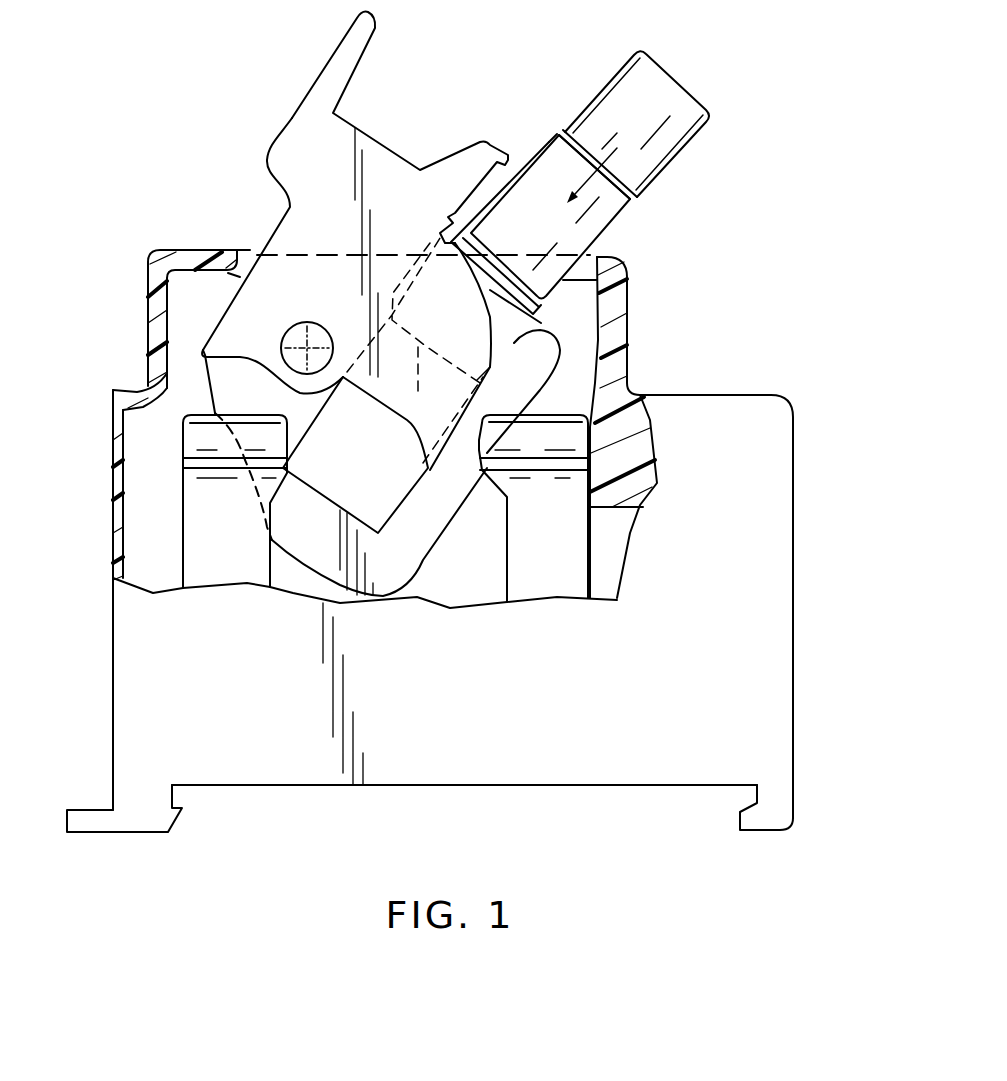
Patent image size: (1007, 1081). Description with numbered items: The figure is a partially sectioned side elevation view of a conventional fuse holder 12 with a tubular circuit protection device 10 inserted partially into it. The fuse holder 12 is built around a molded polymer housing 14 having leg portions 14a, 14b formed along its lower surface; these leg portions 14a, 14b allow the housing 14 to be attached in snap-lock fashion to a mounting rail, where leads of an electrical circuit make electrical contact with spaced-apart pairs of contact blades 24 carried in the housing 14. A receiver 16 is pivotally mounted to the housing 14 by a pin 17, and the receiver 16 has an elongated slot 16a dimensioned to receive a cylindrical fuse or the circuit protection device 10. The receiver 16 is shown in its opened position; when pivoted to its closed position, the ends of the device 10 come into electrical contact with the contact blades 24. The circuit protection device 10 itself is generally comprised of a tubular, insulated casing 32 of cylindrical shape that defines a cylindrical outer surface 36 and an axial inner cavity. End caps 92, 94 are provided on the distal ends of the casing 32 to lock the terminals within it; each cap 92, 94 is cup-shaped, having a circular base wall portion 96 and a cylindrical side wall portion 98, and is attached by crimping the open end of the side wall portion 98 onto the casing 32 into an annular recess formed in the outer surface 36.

The circuit protection device 10 is at (555, 88).
The fuse holder 12 is at (791, 340).
The housing 14 is at (508, 795).
The leg portion 14a is at (107, 825).
The leg portion 14b is at (753, 823).
The receiver 16 is at (288, 117).
The elongated slot 16a is at (383, 483).
The pin 17 is at (290, 340).
The contact blades 24 is at (202, 505).
The casing 32 is at (620, 231).
The outer surface 36 is at (537, 157).
The end cap 92 is at (521, 350).
The end cap 94 is at (716, 128).
The circular base wall portion 96 is at (658, 72).
The cylindrical side wall portion 98 is at (668, 157).